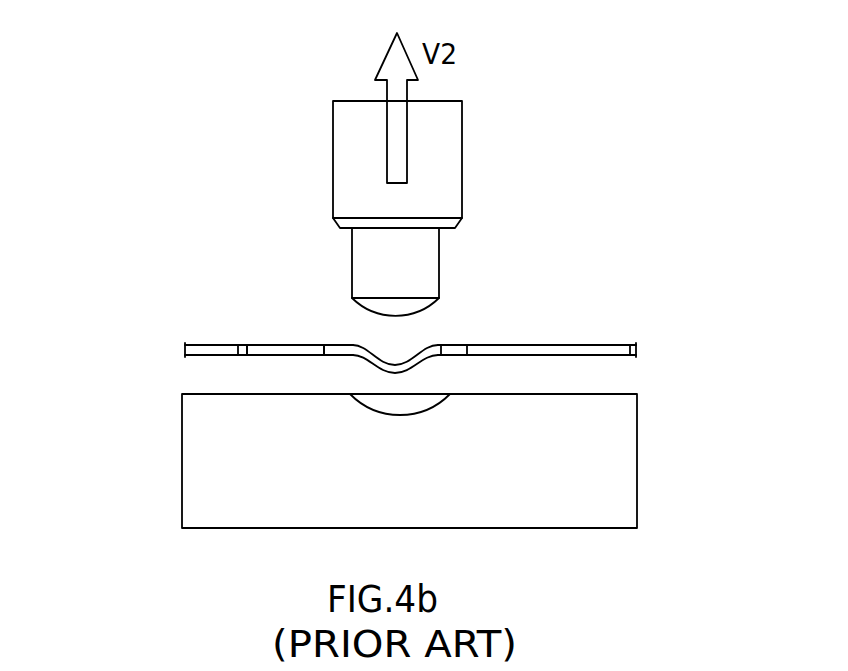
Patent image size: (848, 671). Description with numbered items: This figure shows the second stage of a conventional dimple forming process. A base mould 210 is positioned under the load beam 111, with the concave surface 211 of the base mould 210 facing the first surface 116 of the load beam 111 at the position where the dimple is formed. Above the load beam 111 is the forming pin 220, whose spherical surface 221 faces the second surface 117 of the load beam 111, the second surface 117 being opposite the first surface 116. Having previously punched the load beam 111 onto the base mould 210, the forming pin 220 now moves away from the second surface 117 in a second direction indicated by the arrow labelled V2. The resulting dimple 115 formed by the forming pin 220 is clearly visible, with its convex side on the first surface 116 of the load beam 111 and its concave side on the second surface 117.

The forming pin 220 is at (362, 191).
The spherical surface 221 is at (393, 314).
The load beam 111 is at (247, 348).
The second surface 117 is at (298, 346).
The dimple 115 is at (398, 366).
The first surface 116 is at (588, 355).
The base mould 210 is at (272, 480).
The concave surface 211 is at (387, 399).